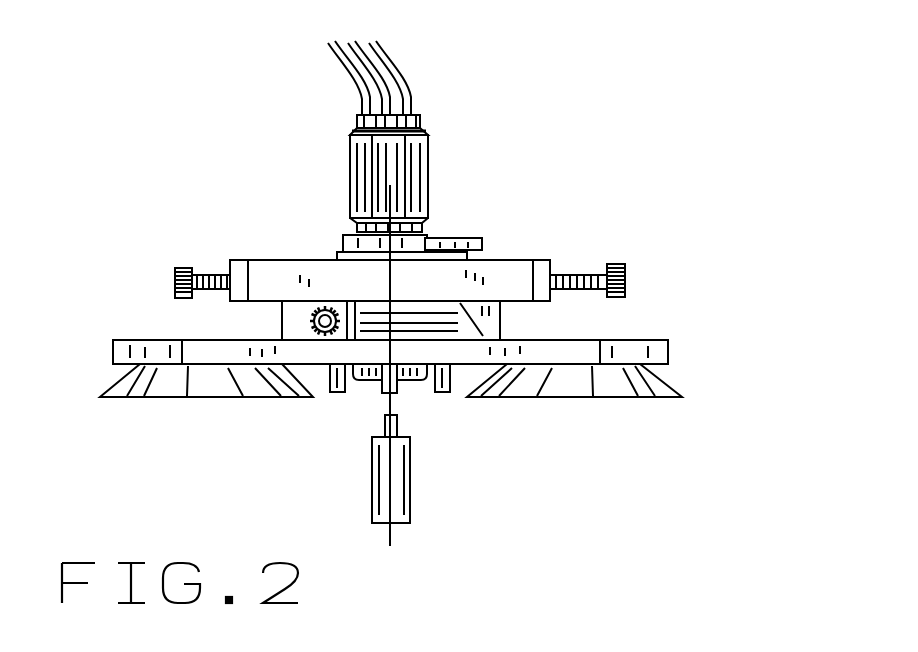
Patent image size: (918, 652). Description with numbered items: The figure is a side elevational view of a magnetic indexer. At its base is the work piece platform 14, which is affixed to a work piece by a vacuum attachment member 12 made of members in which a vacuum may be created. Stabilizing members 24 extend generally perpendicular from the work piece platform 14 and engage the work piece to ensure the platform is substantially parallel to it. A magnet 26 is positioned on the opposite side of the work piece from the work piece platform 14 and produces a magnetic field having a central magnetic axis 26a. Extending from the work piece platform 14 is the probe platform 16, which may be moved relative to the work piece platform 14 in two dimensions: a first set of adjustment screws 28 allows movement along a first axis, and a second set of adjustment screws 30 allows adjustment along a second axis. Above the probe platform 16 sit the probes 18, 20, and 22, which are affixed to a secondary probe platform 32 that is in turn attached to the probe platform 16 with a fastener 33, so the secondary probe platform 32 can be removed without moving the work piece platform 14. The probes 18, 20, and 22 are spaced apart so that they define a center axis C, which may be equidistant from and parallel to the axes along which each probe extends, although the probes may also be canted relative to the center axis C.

The vacuum attachment member 12 is at (182, 398).
The work piece platform 14 is at (650, 351).
The probe platform 16 is at (493, 326).
The probe 18 is at (418, 148).
The probe 20 is at (365, 152).
The probe 22 is at (380, 188).
The stabilizing members 24 is at (384, 393).
The magnet 26 is at (372, 473).
The central magnetic axis 26a is at (398, 532).
The first set of adjustment screws 28 is at (322, 319).
The second set of adjustment screws 30 is at (183, 267).
The secondary probe platform 32 is at (407, 243).
The fastener 33 is at (482, 241).
The center axis C is at (398, 393).